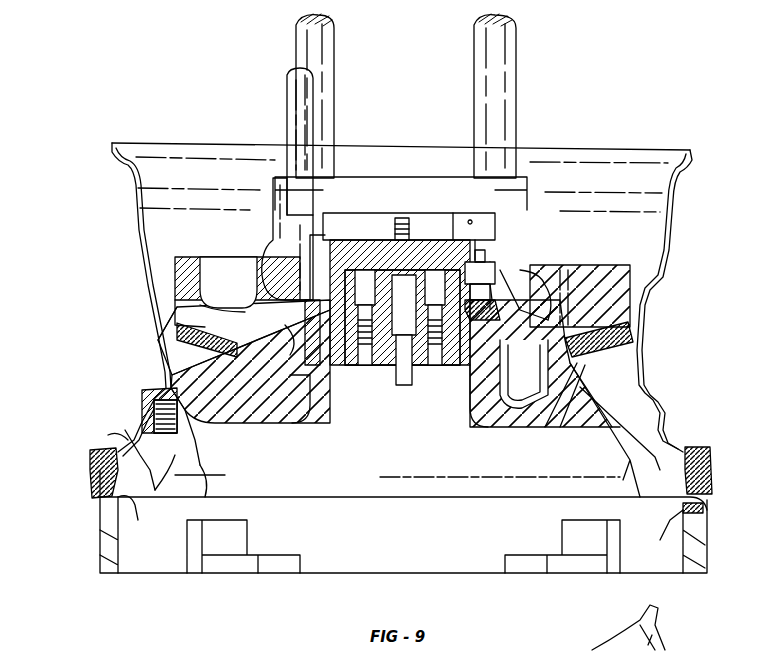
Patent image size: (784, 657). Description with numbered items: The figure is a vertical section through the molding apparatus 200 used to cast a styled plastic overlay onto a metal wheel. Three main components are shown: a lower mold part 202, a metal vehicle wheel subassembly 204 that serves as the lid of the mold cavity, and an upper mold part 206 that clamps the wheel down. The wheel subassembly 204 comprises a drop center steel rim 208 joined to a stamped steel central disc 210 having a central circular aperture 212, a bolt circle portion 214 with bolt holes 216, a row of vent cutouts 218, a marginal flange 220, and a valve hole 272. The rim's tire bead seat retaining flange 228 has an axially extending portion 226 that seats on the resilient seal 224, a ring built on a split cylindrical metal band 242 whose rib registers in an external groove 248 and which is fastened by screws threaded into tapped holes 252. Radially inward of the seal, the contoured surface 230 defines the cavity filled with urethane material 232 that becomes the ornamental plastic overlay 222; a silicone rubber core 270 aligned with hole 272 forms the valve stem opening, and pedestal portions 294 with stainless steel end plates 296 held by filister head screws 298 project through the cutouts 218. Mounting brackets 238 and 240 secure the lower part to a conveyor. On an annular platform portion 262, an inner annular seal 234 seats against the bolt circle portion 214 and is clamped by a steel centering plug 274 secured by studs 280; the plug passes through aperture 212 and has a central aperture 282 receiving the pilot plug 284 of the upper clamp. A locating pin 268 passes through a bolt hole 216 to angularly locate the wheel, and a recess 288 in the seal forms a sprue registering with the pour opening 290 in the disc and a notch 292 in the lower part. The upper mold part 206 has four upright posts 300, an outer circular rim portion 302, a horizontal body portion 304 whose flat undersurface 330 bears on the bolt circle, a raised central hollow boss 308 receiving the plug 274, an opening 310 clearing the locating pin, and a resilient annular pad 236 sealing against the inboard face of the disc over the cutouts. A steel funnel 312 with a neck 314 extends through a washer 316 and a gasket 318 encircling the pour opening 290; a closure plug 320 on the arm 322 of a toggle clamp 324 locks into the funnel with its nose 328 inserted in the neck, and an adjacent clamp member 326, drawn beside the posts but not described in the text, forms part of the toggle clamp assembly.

The molding apparatus 200 is at (105, 196).
The lower mold part 202 is at (98, 547).
The metal vehicle wheel subassembly 204 is at (138, 271).
The upper mold part 206 is at (210, 256).
The drop center steel rim 208 is at (140, 388).
The central disc 210 is at (170, 345).
The central circular aperture 212 is at (385, 370).
The bolt circle portion 214 is at (290, 410).
The bolt holes 216 is at (348, 372).
The cutouts 218 is at (646, 372).
The marginal flange 220 is at (655, 330).
The ornamental plastic overlay 222 is at (662, 427).
The resilient seal 224 is at (88, 453).
The axially extending portion 226 is at (108, 435).
The tire bead seat retaining flange 228 is at (130, 432).
The surface 230 is at (195, 422).
The urethane material 232 is at (250, 425).
The inner annular seal 234 is at (475, 410).
The resilient annular pad 236 is at (172, 337).
The mounting bracket 238 is at (243, 573).
The mounting bracket 240 is at (585, 573).
The split cylindrical metal band 242 is at (100, 504).
The external groove 248 is at (135, 505).
The tapped holes 252 is at (672, 520).
The annular platform portion 262 is at (450, 372).
The locating pin 268 is at (350, 213).
The resilient silicone rubber core 270 is at (185, 442).
The hole 272 is at (160, 385).
The steel centering plug 274 is at (412, 388).
The studs 280 is at (462, 182).
The central aperture 282 is at (418, 225).
The pilot plug 284 is at (440, 199).
The recess 288 is at (470, 368).
The pour opening 290 is at (470, 424).
The notch 292 is at (527, 374).
The pedestal portions 294 is at (620, 383).
The stainless steel end plates 296 is at (555, 426).
The filister head screws 298 is at (592, 428).
The upright posts 300 is at (474, 44).
The outer circular rim portion 302 is at (615, 268).
The horizontal body portion 304 is at (548, 270).
The raised central hollow boss 308 is at (385, 215).
The opening 310 is at (305, 311).
The steel funnel 312 is at (522, 276).
The neck 314 is at (482, 285).
The washer 316 is at (562, 291).
The gasket 318 is at (556, 309).
The closure plug 320 is at (495, 246).
The arm 322 is at (335, 215).
The toggle clamp 324 is at (268, 218).
The rod 326 is at (287, 75).
The nose 328 is at (505, 271).
The flat undersurface 330 is at (290, 356).